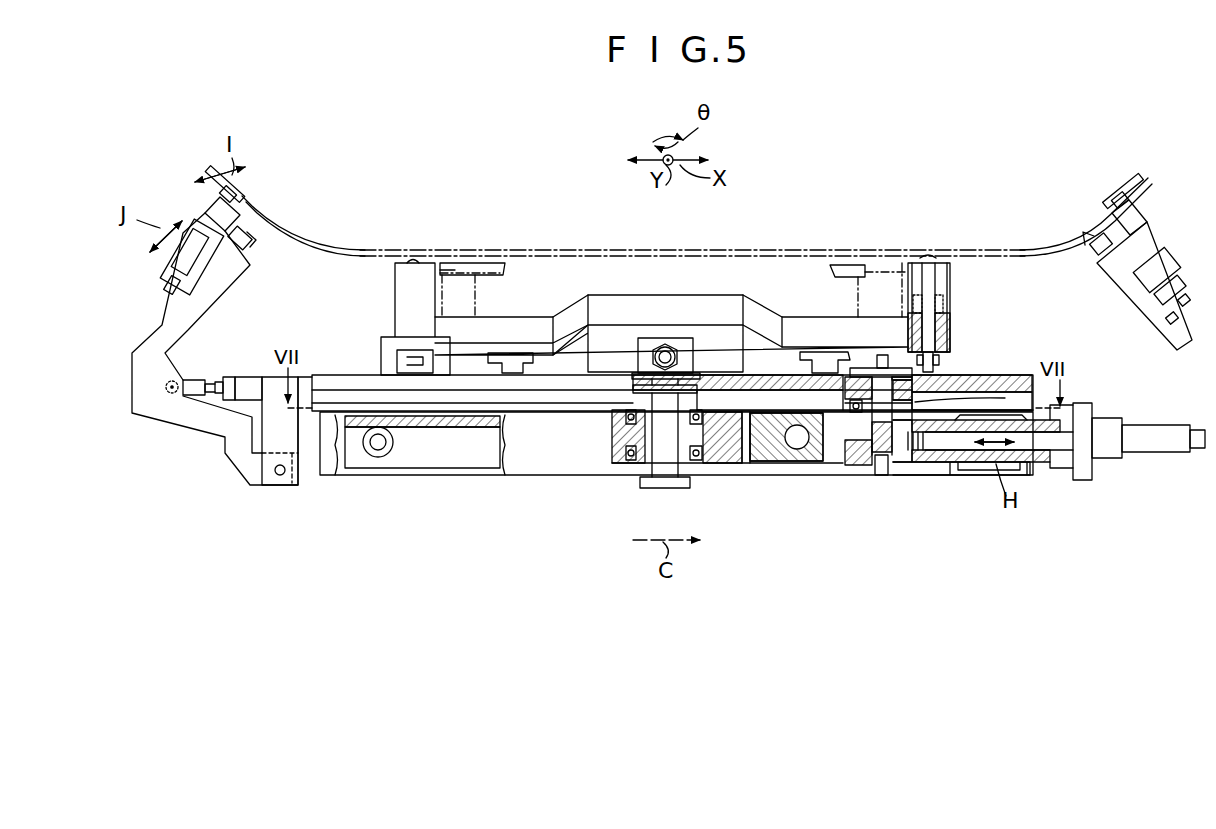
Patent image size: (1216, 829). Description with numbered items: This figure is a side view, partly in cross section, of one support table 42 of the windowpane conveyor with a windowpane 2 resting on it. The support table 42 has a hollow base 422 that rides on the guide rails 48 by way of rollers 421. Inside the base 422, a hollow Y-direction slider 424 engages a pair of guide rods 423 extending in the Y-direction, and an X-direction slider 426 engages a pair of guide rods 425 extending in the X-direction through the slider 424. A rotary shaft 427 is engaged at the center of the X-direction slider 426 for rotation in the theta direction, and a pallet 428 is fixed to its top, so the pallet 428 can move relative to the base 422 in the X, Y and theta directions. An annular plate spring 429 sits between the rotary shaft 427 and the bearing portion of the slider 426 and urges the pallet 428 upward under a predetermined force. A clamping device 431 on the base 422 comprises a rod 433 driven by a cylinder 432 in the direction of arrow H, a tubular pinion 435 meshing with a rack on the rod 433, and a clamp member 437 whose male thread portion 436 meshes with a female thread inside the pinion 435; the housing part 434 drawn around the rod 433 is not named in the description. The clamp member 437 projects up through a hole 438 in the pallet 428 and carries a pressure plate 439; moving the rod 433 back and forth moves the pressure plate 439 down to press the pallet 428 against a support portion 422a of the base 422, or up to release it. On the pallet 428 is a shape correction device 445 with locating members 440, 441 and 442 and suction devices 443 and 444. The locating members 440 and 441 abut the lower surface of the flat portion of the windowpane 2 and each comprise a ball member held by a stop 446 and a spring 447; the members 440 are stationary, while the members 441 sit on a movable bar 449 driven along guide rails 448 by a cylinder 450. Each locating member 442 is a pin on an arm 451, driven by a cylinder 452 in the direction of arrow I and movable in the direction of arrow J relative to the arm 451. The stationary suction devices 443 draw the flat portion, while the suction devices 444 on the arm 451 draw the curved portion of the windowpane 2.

The windowpane 2 is at (641, 249).
The support table 42 is at (888, 204).
The guide rails 48 is at (505, 462).
The rollers 421 is at (398, 458).
The hollow base 422 is at (546, 477).
The support portion 422a is at (935, 382).
The guide rods 423 is at (797, 450).
The Y-direction slider 424 is at (833, 464).
The guide rods 425 is at (746, 466).
The X-direction slider 426 is at (720, 466).
The rotary shaft 427 is at (660, 486).
The pallet 428 is at (343, 373).
The annular plate spring 429 is at (660, 400).
The clamping device 431 is at (1088, 482).
The cylinder 432 is at (1172, 454).
The rod 433 is at (1035, 452).
The housing 434 is at (930, 457).
The tubular pinion 435 is at (905, 478).
The male thread portion 436 is at (886, 478).
The clamp member 437 is at (878, 478).
The hole 438 is at (925, 396).
The pressure plate 439 is at (930, 372).
The locating member 440 is at (416, 262).
The locating member 441 is at (930, 258).
The locating member 442 is at (212, 204).
The suction device 443 is at (478, 303).
The suction device 444 is at (252, 243).
The shape correction device 445 is at (512, 270).
The stop 446 is at (940, 335).
The spring 447 is at (950, 302).
The guide rails 448 is at (510, 375).
The movable bar 449 is at (645, 296).
The cylinder 450 is at (658, 338).
The arm 451 is at (163, 430).
The cylinder 452 is at (240, 376).